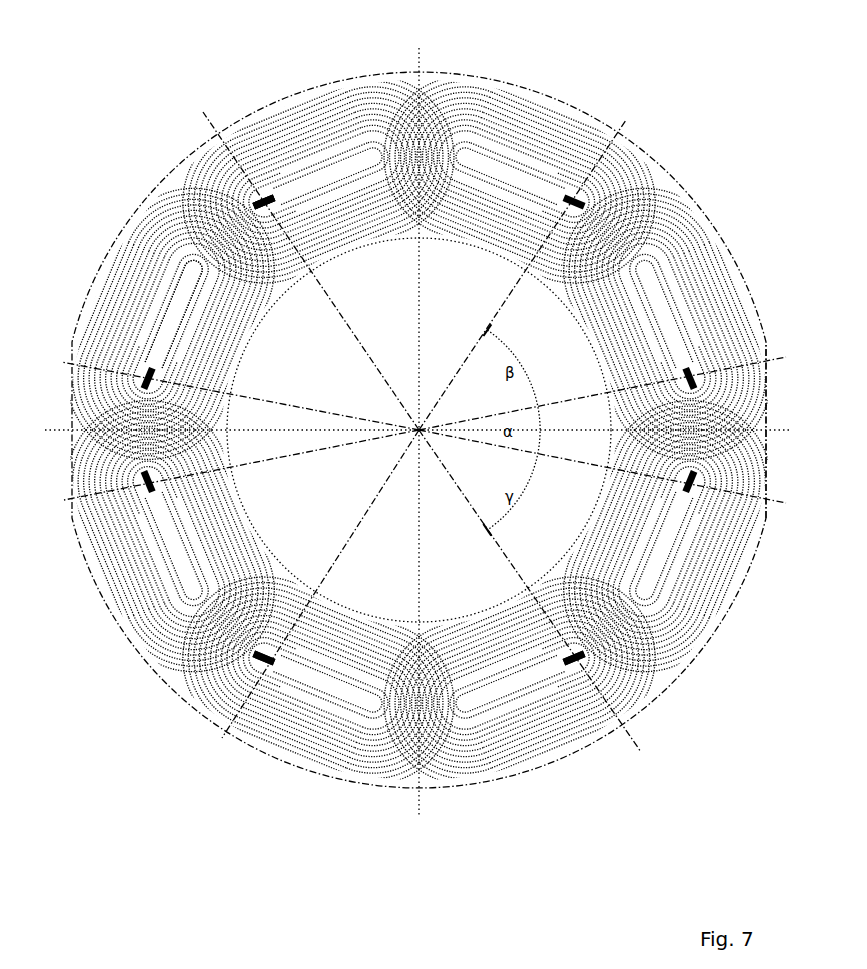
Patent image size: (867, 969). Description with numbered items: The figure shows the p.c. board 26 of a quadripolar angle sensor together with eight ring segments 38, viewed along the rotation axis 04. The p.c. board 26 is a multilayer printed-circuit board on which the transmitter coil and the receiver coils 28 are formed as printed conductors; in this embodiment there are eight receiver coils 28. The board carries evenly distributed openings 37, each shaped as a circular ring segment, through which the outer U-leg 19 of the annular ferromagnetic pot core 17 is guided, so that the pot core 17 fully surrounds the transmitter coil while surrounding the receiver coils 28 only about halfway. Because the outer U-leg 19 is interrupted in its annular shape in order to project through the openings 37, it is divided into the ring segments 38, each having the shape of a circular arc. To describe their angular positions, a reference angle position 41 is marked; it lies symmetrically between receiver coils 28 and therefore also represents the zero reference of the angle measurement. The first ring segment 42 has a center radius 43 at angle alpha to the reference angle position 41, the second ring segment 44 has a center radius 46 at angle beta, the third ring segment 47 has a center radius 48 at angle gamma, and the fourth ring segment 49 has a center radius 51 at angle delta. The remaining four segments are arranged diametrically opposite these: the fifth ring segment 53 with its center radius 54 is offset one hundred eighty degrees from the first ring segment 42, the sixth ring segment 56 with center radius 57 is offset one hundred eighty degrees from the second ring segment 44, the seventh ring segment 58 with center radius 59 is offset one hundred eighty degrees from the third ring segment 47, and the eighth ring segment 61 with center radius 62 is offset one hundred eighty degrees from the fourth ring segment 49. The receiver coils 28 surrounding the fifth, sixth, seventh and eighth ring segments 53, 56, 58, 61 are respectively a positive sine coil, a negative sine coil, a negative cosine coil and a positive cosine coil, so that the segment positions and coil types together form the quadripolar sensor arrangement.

The rotation axis 04 is at (419, 430).
The pot core 17 is at (267, 192).
The outer U-leg 19 is at (263, 202).
The p.c. board 26 is at (192, 163).
The receiver coils 28 is at (133, 303).
The openings 37 is at (155, 337).
The ring segments 38 is at (271, 665).
The reference angle position 41 is at (778, 432).
The first ring segment 42 is at (696, 370).
The center radius 43 is at (617, 385).
The second ring segment 44 is at (577, 192).
The center radius 46 is at (531, 263).
The third ring segment 47 is at (581, 663).
The center radius 48 is at (541, 604).
The fourth ring segment 49 is at (696, 490).
The center radius 51 is at (617, 470).
The fifth ring segment 53 is at (143, 489).
The center radius 54 is at (225, 480).
The sixth ring segment 56 is at (266, 668).
The center radius 57 is at (309, 599).
The seventh ring segment 58 is at (259, 190).
The center radius 59 is at (301, 258).
The eighth ring segment 61 is at (143, 381).
The center radius 62 is at (225, 388).